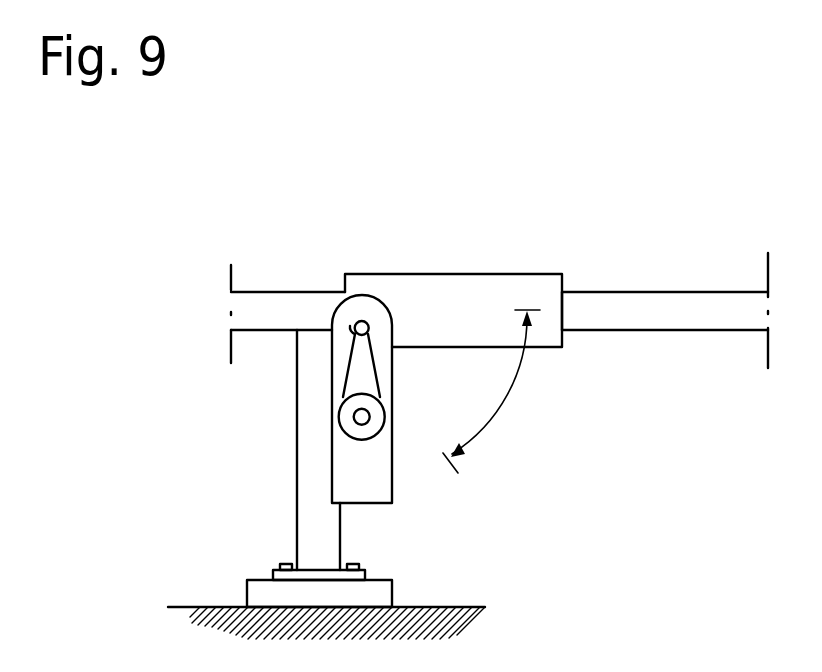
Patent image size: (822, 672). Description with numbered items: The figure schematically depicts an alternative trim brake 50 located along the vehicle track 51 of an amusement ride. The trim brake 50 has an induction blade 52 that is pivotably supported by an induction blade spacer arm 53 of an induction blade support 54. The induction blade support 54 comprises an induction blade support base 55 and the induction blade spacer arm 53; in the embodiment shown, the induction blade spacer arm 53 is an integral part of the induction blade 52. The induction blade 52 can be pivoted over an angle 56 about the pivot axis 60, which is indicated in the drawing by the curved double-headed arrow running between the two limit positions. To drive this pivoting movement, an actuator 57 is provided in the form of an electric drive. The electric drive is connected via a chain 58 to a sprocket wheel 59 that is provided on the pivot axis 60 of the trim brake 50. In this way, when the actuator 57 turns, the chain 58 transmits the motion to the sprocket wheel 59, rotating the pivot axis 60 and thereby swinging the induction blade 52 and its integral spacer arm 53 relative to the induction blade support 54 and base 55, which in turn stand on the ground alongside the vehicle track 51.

The trim brake 50 is at (235, 249).
The vehicle track 51 is at (670, 308).
The induction blade 52 is at (520, 293).
The induction blade spacer arm 53 is at (412, 312).
The induction blade support 54 is at (270, 358).
The induction blade support base 55 is at (373, 477).
The angle 56 is at (494, 391).
The actuator 57 is at (345, 441).
The chain 58 is at (349, 358).
The sprocket wheel 59 is at (350, 317).
The pivot axis 60 is at (370, 316).